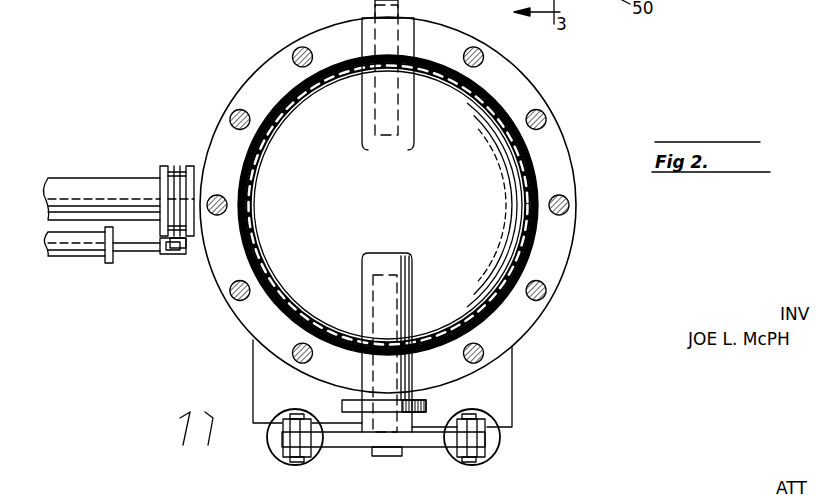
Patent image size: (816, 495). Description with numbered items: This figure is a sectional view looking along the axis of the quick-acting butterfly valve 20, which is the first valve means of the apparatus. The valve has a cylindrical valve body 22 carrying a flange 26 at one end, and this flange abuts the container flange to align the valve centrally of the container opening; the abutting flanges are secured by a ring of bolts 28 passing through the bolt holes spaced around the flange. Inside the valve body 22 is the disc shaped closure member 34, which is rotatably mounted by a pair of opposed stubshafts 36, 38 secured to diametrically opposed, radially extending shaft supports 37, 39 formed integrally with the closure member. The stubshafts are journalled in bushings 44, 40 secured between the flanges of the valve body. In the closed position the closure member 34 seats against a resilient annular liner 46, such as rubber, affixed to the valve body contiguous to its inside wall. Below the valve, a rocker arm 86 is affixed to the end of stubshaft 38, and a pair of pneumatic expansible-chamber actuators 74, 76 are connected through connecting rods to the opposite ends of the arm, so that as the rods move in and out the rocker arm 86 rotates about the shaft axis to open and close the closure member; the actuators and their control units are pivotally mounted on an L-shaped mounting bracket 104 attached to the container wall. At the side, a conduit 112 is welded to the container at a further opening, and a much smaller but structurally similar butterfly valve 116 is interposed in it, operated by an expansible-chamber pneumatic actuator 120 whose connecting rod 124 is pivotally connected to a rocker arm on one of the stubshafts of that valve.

The quick-acting butterfly valve 20 is at (326, 55).
The cylindrical valve body 22 is at (560, 190).
The flange 26 is at (566, 174).
The bolts 28 is at (250, 118).
The disc shaped closure member 34 is at (396, 197).
The stubshaft 36 is at (392, 12).
The shaft support 37 is at (364, 120).
The stubshaft 38 is at (385, 455).
The shaft support 39 is at (358, 262).
The bushing 40 is at (418, 86).
The bushing 44 is at (412, 40).
The resilient annular liner 46 is at (410, 372).
The pneumatic expansible-chamber actuator 74 is at (270, 452).
The pneumatic expansible-chamber actuator 76 is at (491, 444).
The rocker arm 86 is at (428, 449).
The L-shaped mounting bracket 104 is at (512, 405).
The conduit 112 is at (102, 178).
The quick-acting butterfly valve 116 is at (182, 166).
The expansible-chamber pneumatic actuator 120 is at (95, 258).
The connecting rod 124 is at (130, 258).